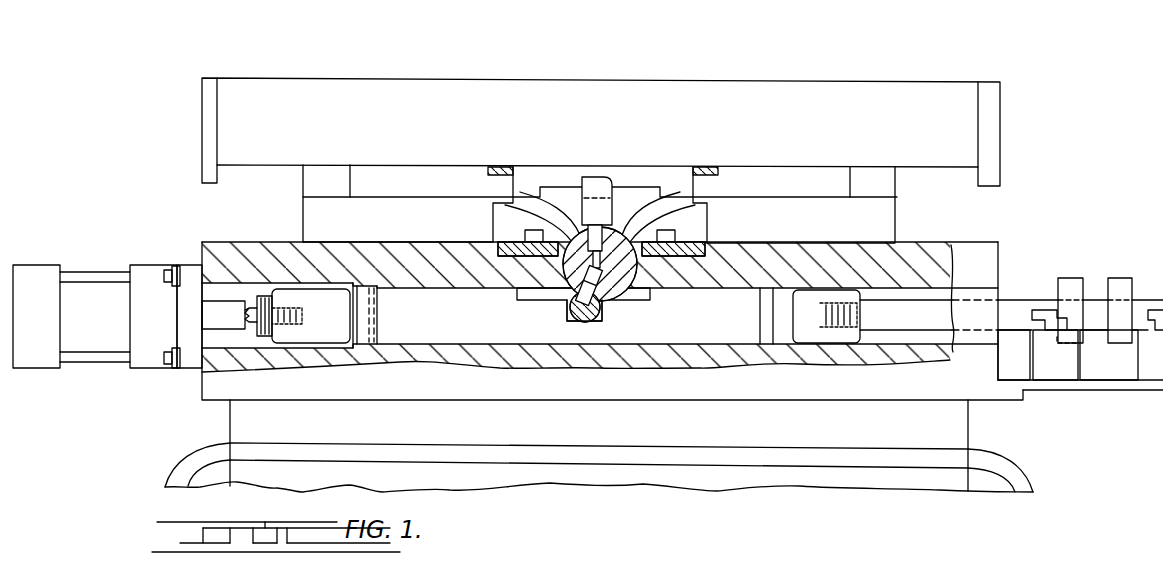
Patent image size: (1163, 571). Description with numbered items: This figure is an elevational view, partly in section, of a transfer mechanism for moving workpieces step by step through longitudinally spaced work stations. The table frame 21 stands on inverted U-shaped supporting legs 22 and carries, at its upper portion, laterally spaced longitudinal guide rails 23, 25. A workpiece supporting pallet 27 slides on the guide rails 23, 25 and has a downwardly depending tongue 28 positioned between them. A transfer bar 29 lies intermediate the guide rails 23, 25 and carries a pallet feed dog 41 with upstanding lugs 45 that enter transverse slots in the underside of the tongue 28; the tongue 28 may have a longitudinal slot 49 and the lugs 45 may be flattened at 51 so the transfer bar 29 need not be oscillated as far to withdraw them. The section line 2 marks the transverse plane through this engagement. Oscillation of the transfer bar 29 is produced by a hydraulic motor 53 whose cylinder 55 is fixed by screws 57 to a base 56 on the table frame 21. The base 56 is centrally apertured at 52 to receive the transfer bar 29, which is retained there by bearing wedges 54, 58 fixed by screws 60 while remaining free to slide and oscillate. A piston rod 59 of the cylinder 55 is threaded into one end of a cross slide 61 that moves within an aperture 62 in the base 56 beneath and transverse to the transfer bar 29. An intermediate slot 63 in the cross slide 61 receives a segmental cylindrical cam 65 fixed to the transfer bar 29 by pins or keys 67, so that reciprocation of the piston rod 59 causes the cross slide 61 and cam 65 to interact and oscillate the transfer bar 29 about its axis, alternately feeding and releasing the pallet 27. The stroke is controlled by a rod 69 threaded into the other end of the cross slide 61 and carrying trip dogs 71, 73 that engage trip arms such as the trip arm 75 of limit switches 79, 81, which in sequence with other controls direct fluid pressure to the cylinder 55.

The section line 2- 2 is at (617, 157).
The table frame 21 is at (190, 413).
The inverted U-shaped supporting legs 22 is at (1032, 488).
The guide rail 23 is at (500, 179).
The guide rail 25 is at (757, 175).
The workpiece supporting pallet 27 is at (948, 88).
The tongue 28 is at (695, 215).
The transfer bar 29 is at (700, 231).
The pallet feed dog 41 is at (538, 200).
The upstanding lugs 45 is at (550, 205).
The longitudinal slot 49 is at (563, 196).
The flattened portion of lug 51 is at (630, 195).
The aperture 52 is at (695, 262).
The hydraulic motor 53 is at (95, 262).
The bearing wedge 54 is at (520, 233).
The cylinder 55 is at (140, 278).
The base 56 is at (246, 252).
The screws 57 is at (168, 272).
The bearing wedge 58 is at (748, 241).
The piston rod 59 is at (233, 332).
The screws 60 is at (486, 222).
The cross slide 61 is at (453, 338).
The aperture 62 is at (322, 300).
The intermediate slot 63 is at (568, 320).
The segmental cylindrical cam 65 is at (565, 306).
The pins or keys 67 is at (562, 258).
The rod 69 is at (1004, 300).
The trip dog 71 is at (1072, 286).
The trip dog 73 is at (1128, 286).
The trip arm 75 is at (1046, 311).
The limit switch 79 is at (1058, 368).
The limit switch 81 is at (1162, 398).